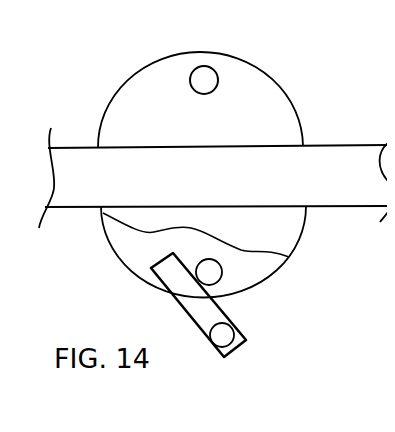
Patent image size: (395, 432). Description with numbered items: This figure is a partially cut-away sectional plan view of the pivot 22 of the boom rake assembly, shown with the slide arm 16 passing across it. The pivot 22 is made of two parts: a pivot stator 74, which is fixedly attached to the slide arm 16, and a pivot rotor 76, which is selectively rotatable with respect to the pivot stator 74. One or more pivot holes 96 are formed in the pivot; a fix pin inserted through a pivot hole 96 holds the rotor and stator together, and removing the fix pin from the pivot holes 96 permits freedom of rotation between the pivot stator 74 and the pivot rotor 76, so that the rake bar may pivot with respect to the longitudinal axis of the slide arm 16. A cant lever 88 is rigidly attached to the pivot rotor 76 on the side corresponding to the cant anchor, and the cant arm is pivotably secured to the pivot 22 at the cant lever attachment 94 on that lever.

The pivot 22 is at (299, 85).
The pivot stator 74 is at (147, 116).
The pivot rotor 76 is at (122, 246).
The slide arm 16 is at (68, 178).
The pivot holes 96 is at (202, 78).
The cant lever 88 is at (214, 306).
The cant lever attachment 94 is at (221, 335).